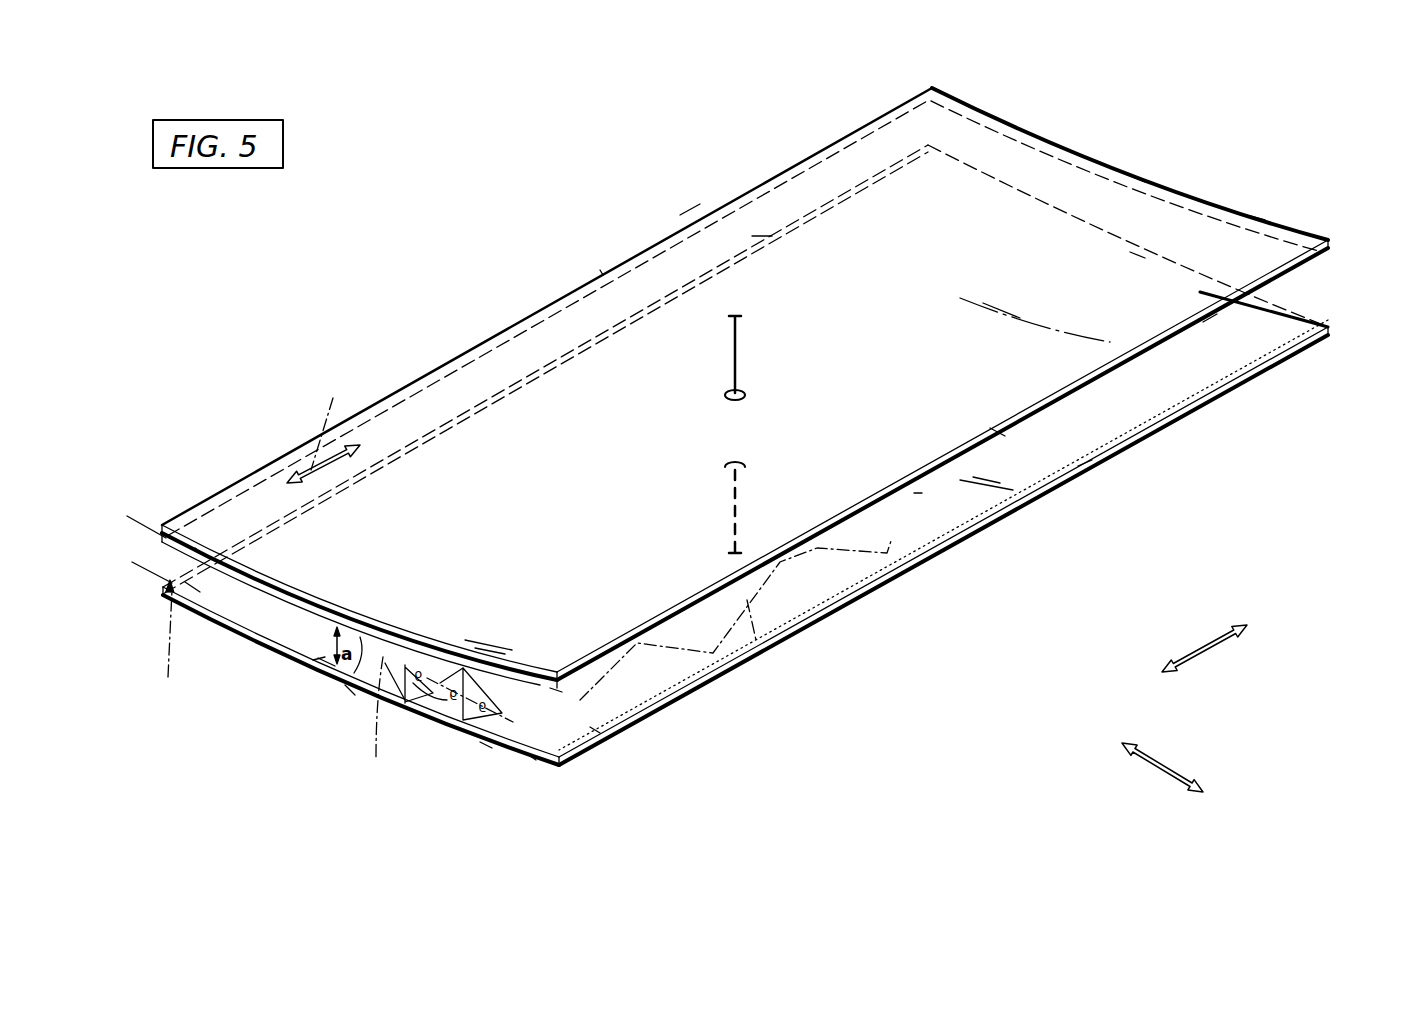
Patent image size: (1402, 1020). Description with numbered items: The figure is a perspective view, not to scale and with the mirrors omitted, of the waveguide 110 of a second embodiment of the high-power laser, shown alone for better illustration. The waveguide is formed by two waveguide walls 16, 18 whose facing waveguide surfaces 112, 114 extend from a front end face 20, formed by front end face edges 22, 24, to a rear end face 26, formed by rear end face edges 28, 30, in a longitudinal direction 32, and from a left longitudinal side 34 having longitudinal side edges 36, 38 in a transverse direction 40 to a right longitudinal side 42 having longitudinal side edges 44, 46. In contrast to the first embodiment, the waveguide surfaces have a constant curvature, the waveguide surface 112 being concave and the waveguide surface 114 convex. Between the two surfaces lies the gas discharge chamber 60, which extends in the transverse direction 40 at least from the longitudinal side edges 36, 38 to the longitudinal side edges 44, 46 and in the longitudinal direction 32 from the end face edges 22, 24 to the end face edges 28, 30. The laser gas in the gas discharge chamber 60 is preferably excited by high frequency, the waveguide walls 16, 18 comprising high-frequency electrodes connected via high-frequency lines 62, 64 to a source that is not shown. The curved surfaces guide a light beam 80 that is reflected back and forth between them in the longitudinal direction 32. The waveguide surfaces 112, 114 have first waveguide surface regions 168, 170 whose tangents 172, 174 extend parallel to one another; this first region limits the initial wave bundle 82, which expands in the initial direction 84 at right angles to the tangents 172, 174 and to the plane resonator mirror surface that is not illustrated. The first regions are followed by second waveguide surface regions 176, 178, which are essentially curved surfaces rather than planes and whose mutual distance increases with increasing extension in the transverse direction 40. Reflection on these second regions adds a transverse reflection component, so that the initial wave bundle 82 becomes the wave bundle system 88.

The waveguide 110 is at (545, 193).
The front end face 20 is at (432, 746).
The left longitudinal side 34 is at (775, 153).
The front end face edge 22 is at (485, 748).
The front end face edge 24 is at (530, 758).
The rear end face 26 is at (1143, 166).
The rear end face edge 28 is at (1137, 255).
The rear end face edge 30 is at (1257, 217).
The longitudinal side edge 36 is at (772, 236).
The longitudinal side edge 38 is at (692, 223).
The waveguide wall 16 is at (1290, 358).
The waveguide wall 18 is at (1210, 318).
The longitudinal direction 32 is at (1215, 648).
The transverse direction 40 is at (1162, 768).
The right longitudinal side 42 is at (1142, 450).
The longitudinal side edge 44 is at (1085, 462).
The longitudinal side edge 46 is at (997, 427).
The gas discharge chamber 60 is at (921, 510).
The high-frequency line 62 is at (735, 507).
The high-frequency line 64 is at (735, 338).
The light beam 80 is at (385, 722).
The initial wave bundle 82 is at (178, 643).
The initial direction 84 is at (333, 398).
The wave bundle system 88 is at (757, 642).
The waveguide surface 112 is at (594, 729).
The waveguide surface 114 is at (556, 690).
The first waveguide surface region 168 is at (190, 585).
The first waveguide surface region 170 is at (200, 553).
The tangent 172 is at (133, 568).
The tangent 174 is at (138, 525).
The second waveguide surface region 176 is at (318, 658).
The second waveguide surface region 178 is at (350, 690).